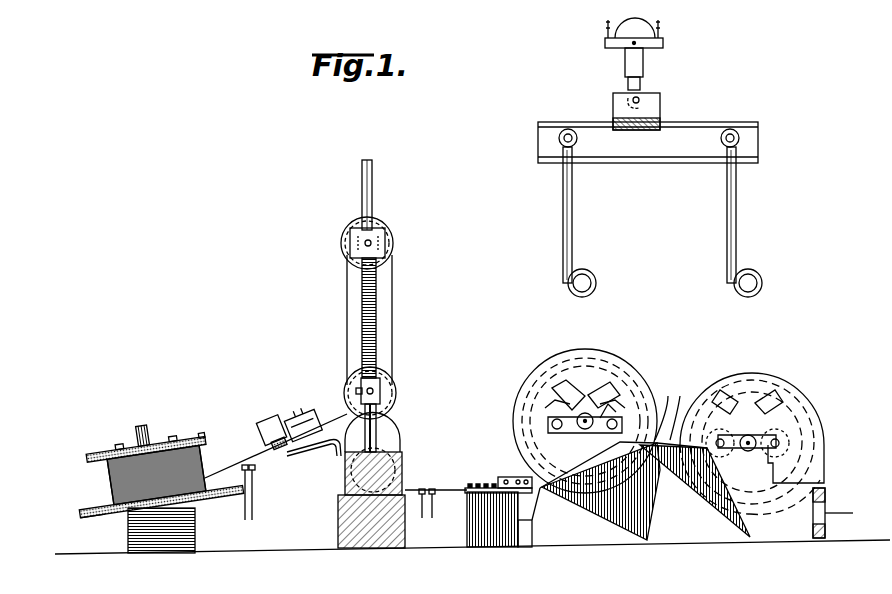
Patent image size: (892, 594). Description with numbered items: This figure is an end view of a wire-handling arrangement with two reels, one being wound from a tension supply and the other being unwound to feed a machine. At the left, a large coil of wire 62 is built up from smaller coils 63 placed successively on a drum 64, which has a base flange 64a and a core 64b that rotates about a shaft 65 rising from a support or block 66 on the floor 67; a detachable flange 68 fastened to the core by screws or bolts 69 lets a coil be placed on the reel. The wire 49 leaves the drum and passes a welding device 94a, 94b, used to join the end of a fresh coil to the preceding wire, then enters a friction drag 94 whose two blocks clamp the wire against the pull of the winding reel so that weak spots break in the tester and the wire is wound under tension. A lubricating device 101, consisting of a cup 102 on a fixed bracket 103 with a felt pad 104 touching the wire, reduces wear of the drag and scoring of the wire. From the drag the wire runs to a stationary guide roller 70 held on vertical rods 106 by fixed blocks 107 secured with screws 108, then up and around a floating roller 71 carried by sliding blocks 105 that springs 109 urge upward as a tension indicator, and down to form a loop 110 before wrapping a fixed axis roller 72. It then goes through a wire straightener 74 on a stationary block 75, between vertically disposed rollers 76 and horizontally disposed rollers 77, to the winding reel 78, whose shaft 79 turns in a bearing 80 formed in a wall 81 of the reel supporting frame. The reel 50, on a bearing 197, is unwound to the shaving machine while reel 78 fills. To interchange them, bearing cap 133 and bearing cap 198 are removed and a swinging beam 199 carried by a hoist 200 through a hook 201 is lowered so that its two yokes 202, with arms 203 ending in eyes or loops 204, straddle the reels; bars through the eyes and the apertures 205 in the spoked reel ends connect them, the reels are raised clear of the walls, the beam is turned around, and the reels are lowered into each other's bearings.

The wire 49 is at (256, 452).
The reel 50 is at (778, 368).
The large coil of wire 62 is at (537, 381).
The smaller coil 63 is at (108, 488).
The drum 64 is at (101, 524).
The base flange 64a is at (76, 516).
The core 64b is at (108, 470).
The shaft 65 is at (143, 425).
The support or block 66 is at (196, 545).
The floor 67 is at (295, 556).
The detachable flange 68 is at (208, 440).
The screws or bolts 69 is at (122, 447).
The stationary guide roller 70 is at (397, 398).
The roller 71 is at (393, 247).
The fixed axis roller 72 is at (390, 446).
The wire straightener 74 is at (481, 470).
The stationary block 75 is at (499, 540).
The vertically disposed rollers 76 is at (476, 484).
The horizontally disposed rollers 77 is at (512, 477).
The winding reel 78 is at (614, 352).
The shaft 79 is at (585, 430).
The bearing 80 is at (577, 406).
The wall 81 is at (667, 434).
The friction drag 94 is at (312, 458).
The welding device 94a is at (244, 466).
The welding device 94b is at (253, 466).
The lubricating device 101 is at (262, 416).
The cup 102 is at (282, 414).
The fixed bracket 103 is at (318, 402).
The felt pad 104 is at (278, 448).
The sliding blocks 105 is at (349, 248).
The vertical rods 106 is at (360, 186).
The fixed blocks 107 is at (381, 384).
The screws 108 is at (355, 390).
The springs 109 is at (361, 290).
The loop 110 is at (345, 318).
The bearing cap 133 is at (605, 410).
The bearing 197 is at (758, 452).
The bearing cap 198 is at (755, 432).
The swinging beam 199 is at (704, 128).
The hoist 200 is at (663, 52).
The hook 201 is at (660, 98).
The yokes 202 is at (560, 195).
The arms 203 is at (563, 230).
The eyes or loops 204 is at (597, 280).
The apertures 205 is at (592, 398).